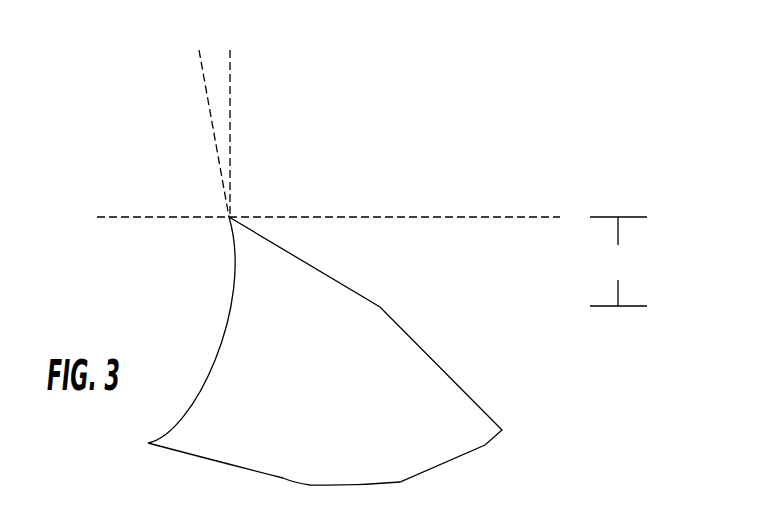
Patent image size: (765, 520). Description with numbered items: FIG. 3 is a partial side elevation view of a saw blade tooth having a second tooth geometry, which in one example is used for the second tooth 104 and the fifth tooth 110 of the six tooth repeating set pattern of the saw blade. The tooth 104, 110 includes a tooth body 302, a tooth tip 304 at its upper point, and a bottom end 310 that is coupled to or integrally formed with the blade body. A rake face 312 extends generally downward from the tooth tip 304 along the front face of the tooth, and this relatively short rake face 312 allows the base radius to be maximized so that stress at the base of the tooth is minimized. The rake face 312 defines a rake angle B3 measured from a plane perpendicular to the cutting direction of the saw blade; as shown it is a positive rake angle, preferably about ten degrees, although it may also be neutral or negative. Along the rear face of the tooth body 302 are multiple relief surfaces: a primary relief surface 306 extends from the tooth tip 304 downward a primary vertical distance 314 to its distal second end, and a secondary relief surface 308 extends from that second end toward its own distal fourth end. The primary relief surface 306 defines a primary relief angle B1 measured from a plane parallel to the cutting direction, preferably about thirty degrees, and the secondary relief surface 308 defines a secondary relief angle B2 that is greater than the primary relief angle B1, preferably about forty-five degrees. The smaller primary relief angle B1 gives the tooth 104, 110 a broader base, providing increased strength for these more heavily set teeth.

The second tooth 104 is at (581, 73).
The fifth tooth 110 is at (518, 96).
The tooth body 302 is at (340, 409).
The tooth tip 304 is at (227, 220).
The primary relief surface 306 is at (283, 250).
The secondary relief surface 308 is at (488, 411).
The bottom end 310 is at (428, 470).
The rake face 312 is at (235, 262).
The primary vertical distance 314 is at (618, 261).
The primary relief angle B1 is at (358, 224).
The secondary relief angle B2 is at (536, 226).
The rake angle B3 is at (226, 88).